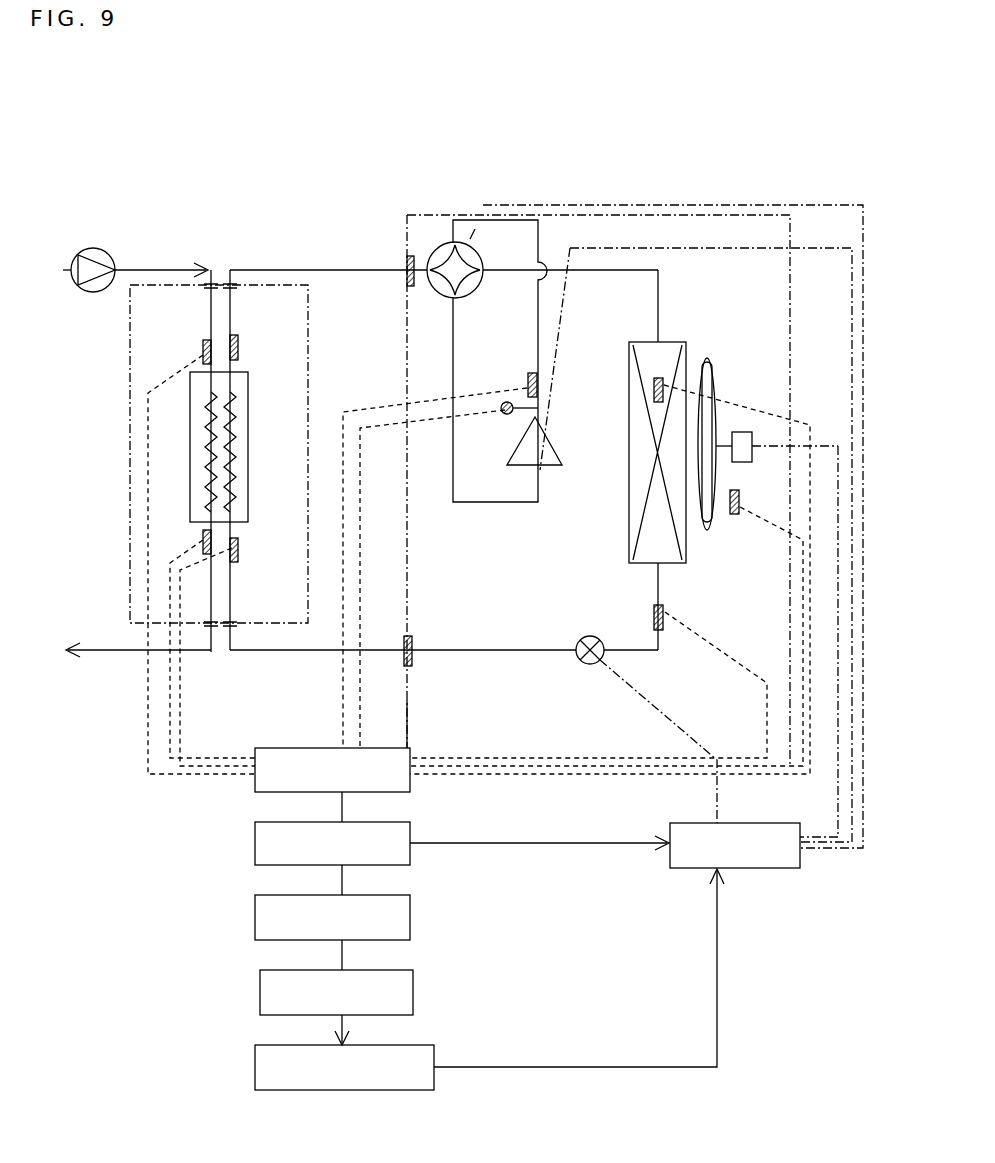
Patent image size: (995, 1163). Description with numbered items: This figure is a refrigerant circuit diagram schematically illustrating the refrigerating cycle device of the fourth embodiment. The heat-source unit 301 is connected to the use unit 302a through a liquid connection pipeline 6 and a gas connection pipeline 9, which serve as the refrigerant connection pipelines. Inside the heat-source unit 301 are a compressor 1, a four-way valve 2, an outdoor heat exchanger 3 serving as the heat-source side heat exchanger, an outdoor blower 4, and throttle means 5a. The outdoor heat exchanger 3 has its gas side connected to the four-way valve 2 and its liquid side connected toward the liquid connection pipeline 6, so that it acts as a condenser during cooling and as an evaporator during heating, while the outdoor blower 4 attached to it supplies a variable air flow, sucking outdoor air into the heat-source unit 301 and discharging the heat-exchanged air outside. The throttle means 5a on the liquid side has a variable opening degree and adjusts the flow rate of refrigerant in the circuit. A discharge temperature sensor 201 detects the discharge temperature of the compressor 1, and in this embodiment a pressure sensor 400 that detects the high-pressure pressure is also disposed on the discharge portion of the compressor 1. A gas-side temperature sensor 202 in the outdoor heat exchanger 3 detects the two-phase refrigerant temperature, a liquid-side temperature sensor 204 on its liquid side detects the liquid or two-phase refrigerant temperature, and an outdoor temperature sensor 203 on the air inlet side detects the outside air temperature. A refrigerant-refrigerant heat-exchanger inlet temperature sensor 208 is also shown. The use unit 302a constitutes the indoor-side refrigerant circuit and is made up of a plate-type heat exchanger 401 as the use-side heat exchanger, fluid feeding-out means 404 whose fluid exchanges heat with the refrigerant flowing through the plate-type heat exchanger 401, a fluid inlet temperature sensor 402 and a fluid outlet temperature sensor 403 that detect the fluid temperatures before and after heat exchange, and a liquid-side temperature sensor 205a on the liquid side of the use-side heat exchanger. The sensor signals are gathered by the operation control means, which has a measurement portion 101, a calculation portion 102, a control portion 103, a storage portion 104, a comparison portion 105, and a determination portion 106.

The compressor 1 is at (549, 470).
The four-way valve 2 is at (420, 256).
The outdoor heat exchanger 3 is at (640, 358).
The outdoor blower 4 is at (746, 464).
The throttle means 5a is at (593, 666).
The liquid connection pipeline 6 is at (373, 652).
The gas connection pipeline 9 is at (404, 266).
The discharge temperature sensor 201 is at (527, 378).
The gas-side temperature sensor 202 is at (653, 392).
The outdoor temperature sensor 203 is at (739, 515).
The liquid-side temperature sensor 204 is at (663, 632).
The liquid-side temperature sensor 205a is at (240, 556).
The refrigerant-refrigerant heat-exchanger inlet temperature sensor 208 is at (247, 378).
The heat-source unit 301 is at (409, 706).
The use unit 302a is at (268, 632).
The pressure sensor 400 is at (503, 414).
The plate-type heat exchanger 401 is at (246, 528).
The fluid inlet temperature sensor 402 is at (203, 352).
The fluid outlet temperature sensor 403 is at (203, 541).
The fluid feeding-out means 404 is at (83, 252).
The measurement portion 101 is at (376, 799).
The calculation portion 102 is at (376, 872).
The control portion 103 is at (750, 872).
The storage portion 104 is at (376, 946).
The comparison portion 105 is at (376, 1021).
The determination portion 106 is at (376, 1096).